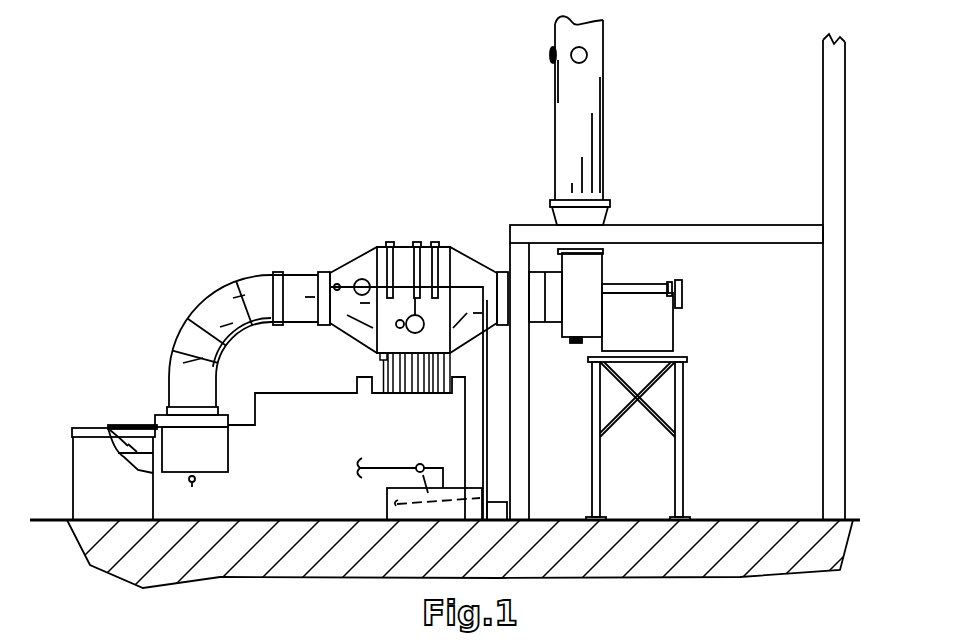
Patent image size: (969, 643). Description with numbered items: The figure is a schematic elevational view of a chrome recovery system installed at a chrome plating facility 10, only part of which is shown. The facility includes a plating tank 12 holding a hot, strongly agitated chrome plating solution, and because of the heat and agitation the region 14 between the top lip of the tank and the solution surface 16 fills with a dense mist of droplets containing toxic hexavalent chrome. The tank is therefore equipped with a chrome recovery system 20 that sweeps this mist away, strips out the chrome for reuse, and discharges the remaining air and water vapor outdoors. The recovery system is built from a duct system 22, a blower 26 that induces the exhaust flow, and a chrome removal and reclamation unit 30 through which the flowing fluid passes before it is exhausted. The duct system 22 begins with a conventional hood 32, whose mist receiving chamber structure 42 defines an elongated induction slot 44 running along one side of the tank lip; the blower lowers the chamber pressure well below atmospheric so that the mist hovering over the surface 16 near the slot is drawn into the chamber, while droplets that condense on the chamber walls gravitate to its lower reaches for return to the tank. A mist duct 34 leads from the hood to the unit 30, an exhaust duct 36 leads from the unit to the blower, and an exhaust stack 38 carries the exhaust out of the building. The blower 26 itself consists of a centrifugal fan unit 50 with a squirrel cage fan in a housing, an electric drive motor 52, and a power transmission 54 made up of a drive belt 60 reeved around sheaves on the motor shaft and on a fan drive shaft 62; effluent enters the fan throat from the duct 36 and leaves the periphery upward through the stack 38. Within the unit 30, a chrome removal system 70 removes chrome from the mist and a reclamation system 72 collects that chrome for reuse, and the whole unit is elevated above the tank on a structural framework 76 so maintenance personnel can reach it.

The chrome plating facility 10 is at (230, 225).
The plating tank 12 is at (102, 500).
The region 14 is at (123, 440).
The solution surface 16 is at (110, 433).
The chrome recovery system 20 is at (407, 232).
The duct system 22 is at (190, 316).
The blower 26 is at (580, 278).
The chrome removal and reclamation unit 30 is at (420, 277).
The hood 32 is at (227, 453).
The mist duct 34 is at (200, 342).
The exhaust duct 36 is at (535, 297).
The exhaust stack 38 is at (587, 100).
The mist receiving chamber structure 42 is at (173, 473).
The induction slot 44 is at (140, 447).
The centrifugal fan unit 50 is at (575, 345).
The electric drive motor 52 is at (658, 330).
The power transmission 54 is at (697, 283).
The drive belt 60 is at (687, 300).
The fan drive shaft 62 is at (636, 293).
The chrome removal system 70 is at (352, 258).
The reclamation system 72 is at (451, 522).
The structural framework 76 is at (720, 222).